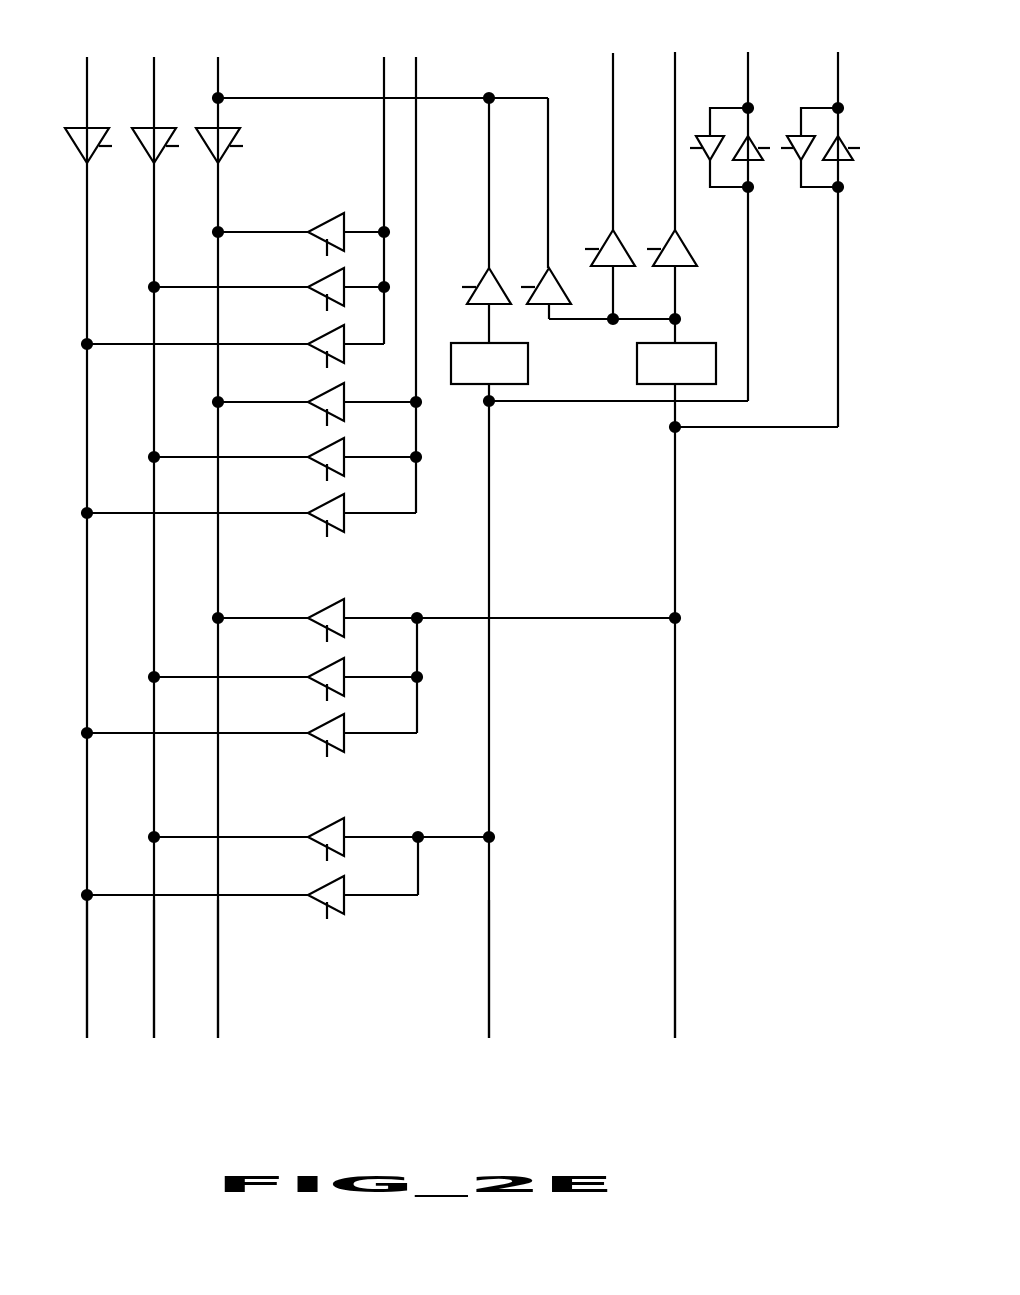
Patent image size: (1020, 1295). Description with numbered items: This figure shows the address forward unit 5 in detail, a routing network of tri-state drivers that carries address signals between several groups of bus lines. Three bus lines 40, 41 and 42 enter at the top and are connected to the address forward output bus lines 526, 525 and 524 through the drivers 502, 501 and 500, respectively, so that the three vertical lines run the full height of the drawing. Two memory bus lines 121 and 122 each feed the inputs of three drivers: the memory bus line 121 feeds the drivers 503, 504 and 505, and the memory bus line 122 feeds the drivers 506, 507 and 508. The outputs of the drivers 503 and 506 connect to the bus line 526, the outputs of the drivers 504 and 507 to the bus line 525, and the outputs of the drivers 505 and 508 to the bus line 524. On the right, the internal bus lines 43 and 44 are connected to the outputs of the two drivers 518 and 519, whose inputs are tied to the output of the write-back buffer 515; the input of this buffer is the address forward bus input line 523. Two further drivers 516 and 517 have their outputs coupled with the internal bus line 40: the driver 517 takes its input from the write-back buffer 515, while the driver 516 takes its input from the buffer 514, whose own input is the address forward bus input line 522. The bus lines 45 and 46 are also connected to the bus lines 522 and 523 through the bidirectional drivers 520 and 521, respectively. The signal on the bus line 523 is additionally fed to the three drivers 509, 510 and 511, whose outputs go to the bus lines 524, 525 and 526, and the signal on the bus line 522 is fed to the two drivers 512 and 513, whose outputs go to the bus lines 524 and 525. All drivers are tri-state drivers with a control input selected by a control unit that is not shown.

The address forward unit 5 is at (847, 494).
The bus line 40 is at (218, 70).
The bus line 41 is at (154, 70).
The bus line 42 is at (87, 70).
The internal bus line 43 is at (613, 70).
The internal bus line 44 is at (675, 70).
The bus line 45 is at (748, 70).
The bus line 46 is at (838, 70).
The memory bus line 121 is at (384, 70).
The memory bus line 122 is at (416, 70).
The driver 500 is at (82, 150).
The driver 501 is at (148, 150).
The driver 502 is at (213, 150).
The driver 503 is at (322, 221).
The driver 504 is at (322, 276).
The driver 505 is at (322, 333).
The driver 506 is at (322, 391).
The driver 507 is at (322, 446).
The driver 508 is at (322, 502).
The driver 509 is at (322, 607).
The driver 510 is at (322, 666).
The driver 511 is at (322, 722).
The driver 512 is at (322, 826).
The driver 513 is at (322, 884).
The buffer 514 is at (530, 366).
The write-back buffer 515 is at (718, 358).
The driver 516 is at (498, 280).
The driver 517 is at (557, 278).
The driver 518 is at (620, 245).
The driver 519 is at (682, 246).
The bidirectional driver 520 is at (756, 180).
The bidirectional driver 521 is at (846, 180).
The address forward bus input line 522 is at (489, 1020).
The address forward bus input line 523 is at (675, 1016).
The address forward output bus line 524 is at (87, 1020).
The address forward output bus line 525 is at (154, 1020).
The address forward output bus line 526 is at (218, 1020).